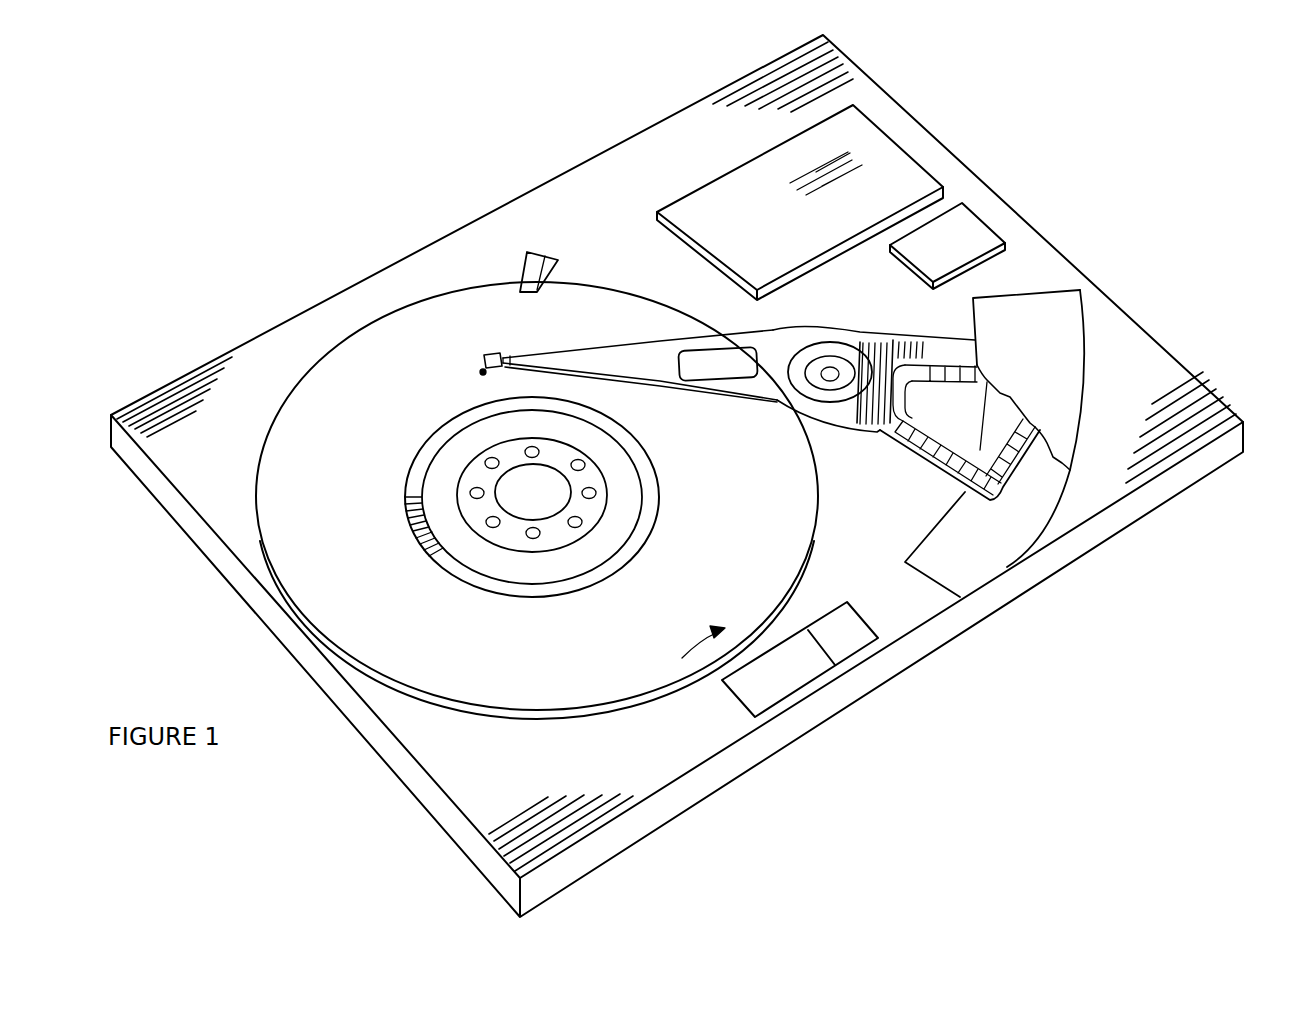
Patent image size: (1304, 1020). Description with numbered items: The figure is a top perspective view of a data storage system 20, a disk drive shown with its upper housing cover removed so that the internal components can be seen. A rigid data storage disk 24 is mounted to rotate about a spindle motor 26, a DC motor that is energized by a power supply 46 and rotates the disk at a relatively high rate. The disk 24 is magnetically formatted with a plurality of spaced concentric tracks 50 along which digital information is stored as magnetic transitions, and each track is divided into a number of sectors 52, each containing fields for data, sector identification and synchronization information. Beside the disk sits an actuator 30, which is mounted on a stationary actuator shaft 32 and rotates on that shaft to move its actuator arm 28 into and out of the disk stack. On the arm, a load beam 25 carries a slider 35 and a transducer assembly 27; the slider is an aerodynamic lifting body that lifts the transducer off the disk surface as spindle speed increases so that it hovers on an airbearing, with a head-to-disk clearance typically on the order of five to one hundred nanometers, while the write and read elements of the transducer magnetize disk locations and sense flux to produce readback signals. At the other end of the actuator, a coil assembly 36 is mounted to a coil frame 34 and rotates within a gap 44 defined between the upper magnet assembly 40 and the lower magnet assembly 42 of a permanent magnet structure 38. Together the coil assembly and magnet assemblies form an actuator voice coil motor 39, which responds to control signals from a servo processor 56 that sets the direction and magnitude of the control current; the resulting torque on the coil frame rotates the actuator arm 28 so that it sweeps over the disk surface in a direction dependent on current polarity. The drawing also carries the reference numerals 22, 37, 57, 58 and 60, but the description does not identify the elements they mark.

The data storage system 20 is at (1030, 116).
The base 22 is at (867, 675).
The data storage disk 24 is at (395, 605).
The load beam 25 is at (510, 363).
The spindle motor 26 is at (553, 518).
The transducer assembly 27 is at (480, 373).
The actuator arm 28 is at (650, 367).
The actuator 30 is at (847, 422).
The actuator shaft 32 is at (829, 368).
The coil frame 34 is at (893, 342).
The slider 35 is at (488, 357).
The coil assembly 36 is at (917, 380).
The rotation direction 37 is at (806, 446).
The permanent magnet structure 38 is at (1102, 316).
The actuator voice coil motor 39 is at (942, 498).
The upper magnet assembly 40 is at (1066, 373).
The lower magnet assembly 42 is at (928, 565).
The gap 44 is at (1044, 474).
The power supply 46 is at (739, 212).
The track 50 is at (422, 445).
The sector 52 is at (410, 522).
The servo processor 56 is at (761, 675).
The connector portion 57 is at (819, 641).
The circuit module 58 is at (940, 244).
The ramp 60 is at (542, 253).